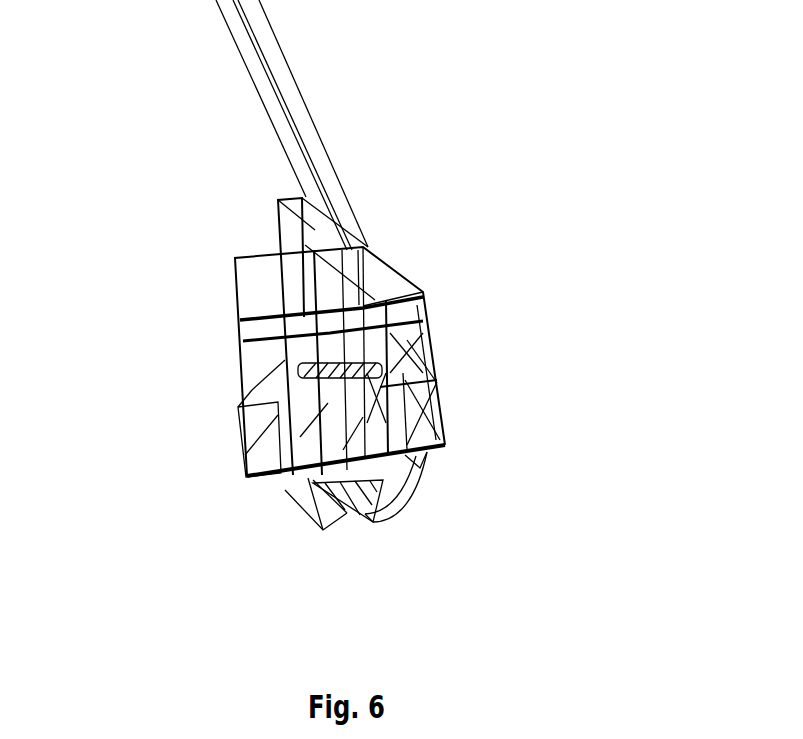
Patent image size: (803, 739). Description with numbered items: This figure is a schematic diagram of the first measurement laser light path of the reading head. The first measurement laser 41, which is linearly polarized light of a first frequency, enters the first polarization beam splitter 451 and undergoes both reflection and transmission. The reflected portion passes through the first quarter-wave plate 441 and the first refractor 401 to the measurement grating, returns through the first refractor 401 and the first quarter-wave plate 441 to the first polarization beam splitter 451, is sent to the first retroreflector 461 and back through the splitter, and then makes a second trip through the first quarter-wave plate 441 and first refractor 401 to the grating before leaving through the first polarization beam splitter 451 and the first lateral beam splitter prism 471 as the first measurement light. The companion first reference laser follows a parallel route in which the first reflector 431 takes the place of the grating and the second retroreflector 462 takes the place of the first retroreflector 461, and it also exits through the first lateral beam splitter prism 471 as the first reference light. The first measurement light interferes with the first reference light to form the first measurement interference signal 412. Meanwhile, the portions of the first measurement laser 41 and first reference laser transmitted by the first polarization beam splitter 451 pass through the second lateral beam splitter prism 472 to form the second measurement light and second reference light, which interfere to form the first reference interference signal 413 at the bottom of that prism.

The first refractor 401 is at (418, 150).
The first measurement laser 41 is at (260, 361).
The first reflector 431 is at (245, 302).
The first quarter-wave plate 441 is at (491, 335).
The first polarization beam splitter 451 is at (493, 375).
The second lateral beam splitter prism 472 is at (521, 398).
The first lateral beam splitter prism 471 is at (164, 451).
The first measurement interference signal 412 is at (197, 519).
The second retroreflector 462 is at (313, 513).
The first retroreflector 461 is at (387, 520).
The first reference interference signal 413 is at (522, 483).